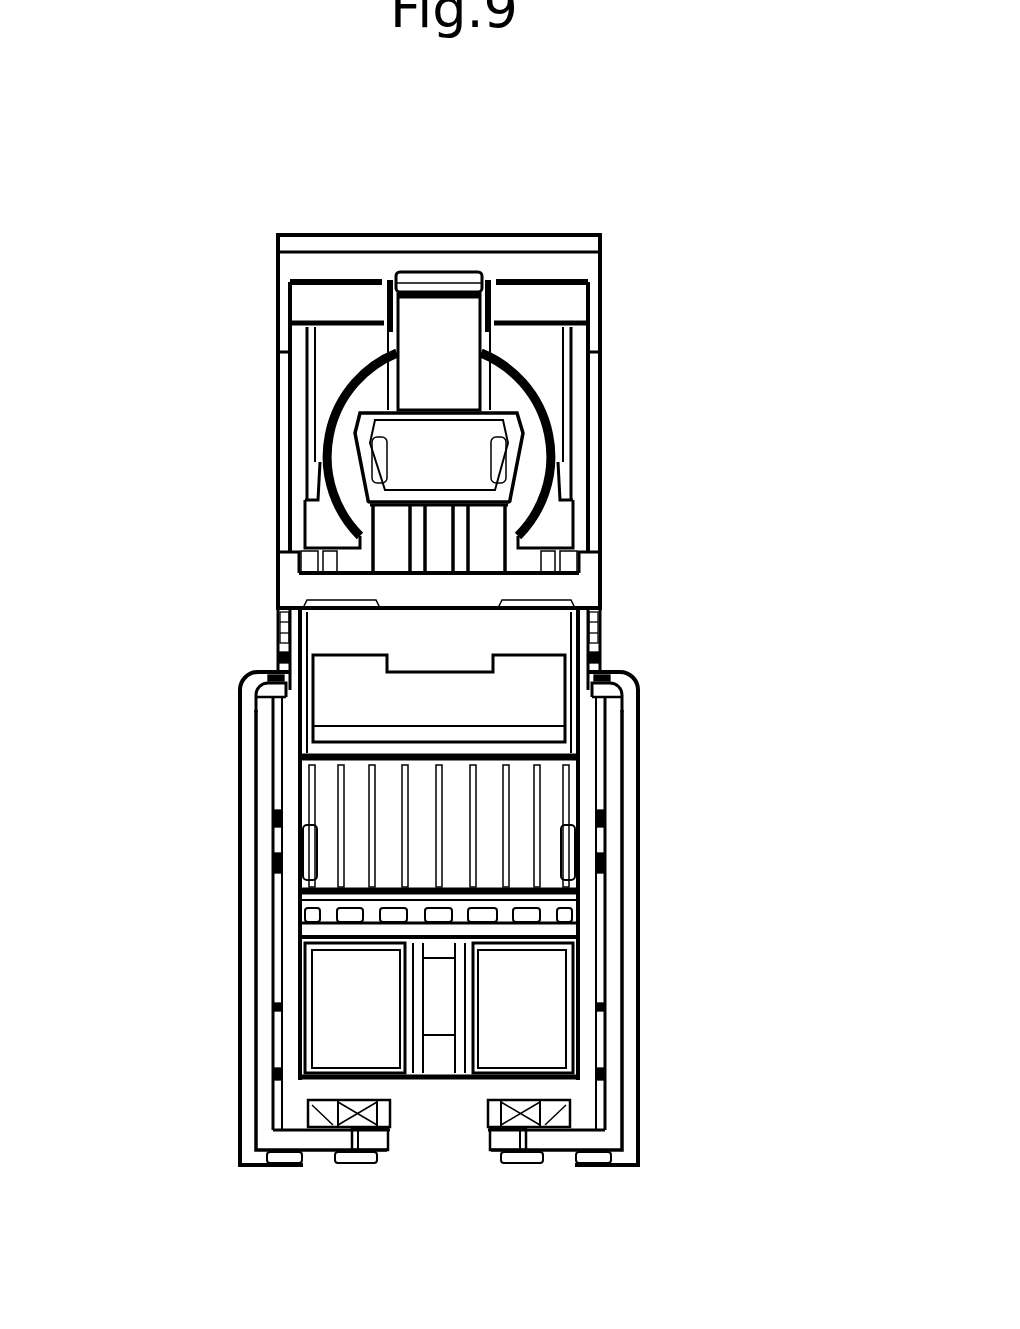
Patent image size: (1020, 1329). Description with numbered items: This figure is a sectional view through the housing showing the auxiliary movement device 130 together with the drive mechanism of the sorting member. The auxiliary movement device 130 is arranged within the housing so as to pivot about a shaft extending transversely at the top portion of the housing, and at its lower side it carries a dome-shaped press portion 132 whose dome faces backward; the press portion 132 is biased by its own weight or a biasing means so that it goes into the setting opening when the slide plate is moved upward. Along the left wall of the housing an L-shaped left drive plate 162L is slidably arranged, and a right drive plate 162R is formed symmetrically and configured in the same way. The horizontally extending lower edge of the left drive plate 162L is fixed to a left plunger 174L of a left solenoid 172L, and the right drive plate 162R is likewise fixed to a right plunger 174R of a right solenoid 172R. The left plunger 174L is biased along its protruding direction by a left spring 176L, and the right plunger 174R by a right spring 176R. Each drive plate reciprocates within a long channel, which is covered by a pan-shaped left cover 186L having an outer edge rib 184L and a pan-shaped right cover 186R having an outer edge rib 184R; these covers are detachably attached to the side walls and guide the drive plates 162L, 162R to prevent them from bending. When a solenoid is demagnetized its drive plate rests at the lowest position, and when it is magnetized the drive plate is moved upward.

The auxiliary movement device 130 is at (367, 455).
The press portion 132 is at (318, 300).
The left drive plate 162L is at (268, 813).
The right drive plate 162R is at (628, 847).
The left solenoid 172L is at (328, 983).
The right solenoid 172R is at (550, 1000).
The left plunger 174L is at (393, 1112).
The right plunger 174R is at (490, 1115).
The left spring 176L is at (392, 1140).
The right spring 176R is at (498, 1140).
The outer edge rib 184L is at (274, 683).
The outer edge rib 184R is at (603, 682).
The left cover 186L is at (250, 753).
The right cover 186R is at (632, 745).